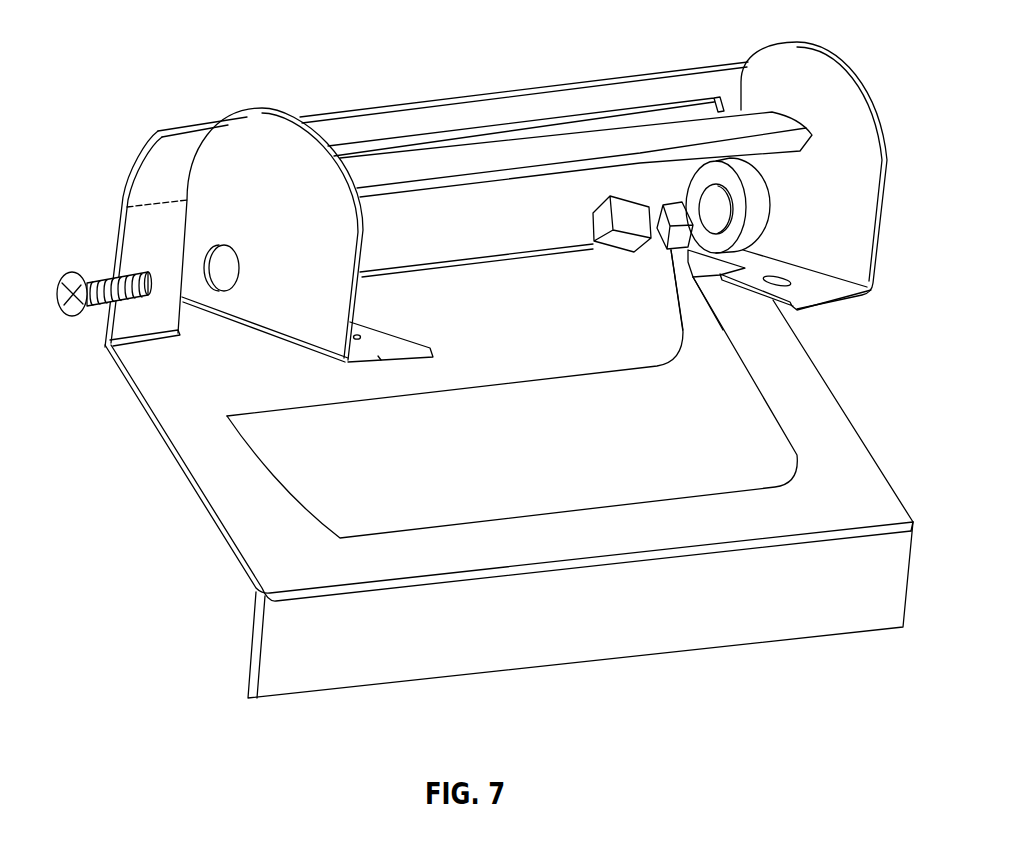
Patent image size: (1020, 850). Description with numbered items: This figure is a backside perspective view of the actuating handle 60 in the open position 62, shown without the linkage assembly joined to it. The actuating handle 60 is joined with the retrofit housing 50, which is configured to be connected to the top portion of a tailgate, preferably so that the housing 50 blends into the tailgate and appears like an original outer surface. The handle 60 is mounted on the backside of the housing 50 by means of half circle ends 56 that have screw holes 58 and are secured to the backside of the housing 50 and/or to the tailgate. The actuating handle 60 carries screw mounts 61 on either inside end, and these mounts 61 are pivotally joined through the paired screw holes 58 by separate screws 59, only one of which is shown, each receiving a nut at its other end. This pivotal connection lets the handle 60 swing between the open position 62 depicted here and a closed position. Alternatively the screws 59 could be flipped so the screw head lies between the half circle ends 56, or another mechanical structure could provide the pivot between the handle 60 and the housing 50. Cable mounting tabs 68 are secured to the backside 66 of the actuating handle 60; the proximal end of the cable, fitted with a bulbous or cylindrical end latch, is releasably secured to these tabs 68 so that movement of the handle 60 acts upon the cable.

The retrofit housing 50 is at (815, 415).
The half circle ends 56 is at (243, 126).
The screw holes 58 is at (212, 247).
The screw 59 is at (55, 302).
The actuating handle 60 is at (763, 127).
The screw mounts 61 is at (747, 222).
The open position 62 is at (185, 602).
The backside of the actuating handle 66 is at (548, 237).
The cable mounting tabs 68 is at (632, 200).